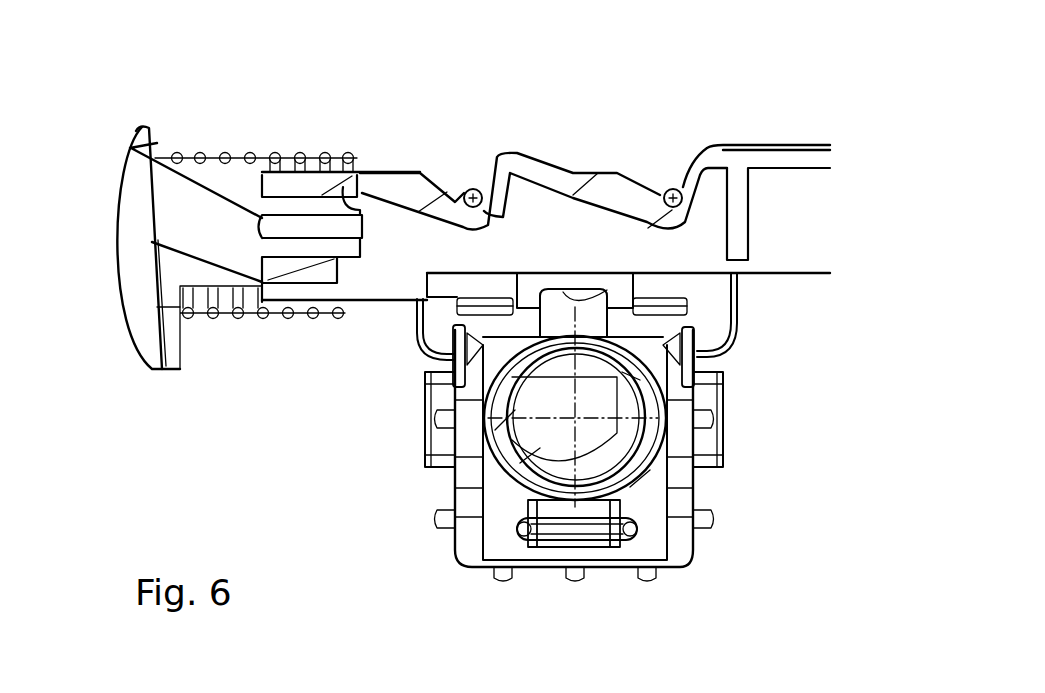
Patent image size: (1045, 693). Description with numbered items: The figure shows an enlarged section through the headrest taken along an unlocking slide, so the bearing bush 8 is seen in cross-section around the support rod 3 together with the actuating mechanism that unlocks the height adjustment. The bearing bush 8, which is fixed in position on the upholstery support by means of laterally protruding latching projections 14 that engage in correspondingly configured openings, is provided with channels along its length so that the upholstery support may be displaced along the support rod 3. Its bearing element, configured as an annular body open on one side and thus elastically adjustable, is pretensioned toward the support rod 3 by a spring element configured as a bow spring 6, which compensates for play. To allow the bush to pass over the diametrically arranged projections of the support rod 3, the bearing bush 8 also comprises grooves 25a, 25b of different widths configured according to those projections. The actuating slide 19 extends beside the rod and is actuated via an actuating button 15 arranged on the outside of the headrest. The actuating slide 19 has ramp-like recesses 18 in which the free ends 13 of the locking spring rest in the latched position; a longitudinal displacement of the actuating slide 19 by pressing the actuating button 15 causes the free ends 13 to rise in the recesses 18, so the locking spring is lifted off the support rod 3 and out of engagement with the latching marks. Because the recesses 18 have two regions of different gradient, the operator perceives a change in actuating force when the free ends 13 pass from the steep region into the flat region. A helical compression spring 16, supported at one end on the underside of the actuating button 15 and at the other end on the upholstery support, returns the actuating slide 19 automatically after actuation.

The support rod 3 is at (543, 442).
The bow spring 6 is at (548, 547).
The bearing bush 8 is at (683, 478).
The free ends of the locking spring 13 is at (472, 192).
The latching projections 14 is at (423, 462).
The actuating button 15 is at (140, 232).
The helical compression spring 16 is at (275, 150).
The ramp-like recesses 18 is at (437, 168).
The actuating slide 19 is at (380, 282).
The groove 25a is at (607, 292).
The groove 25b is at (593, 545).